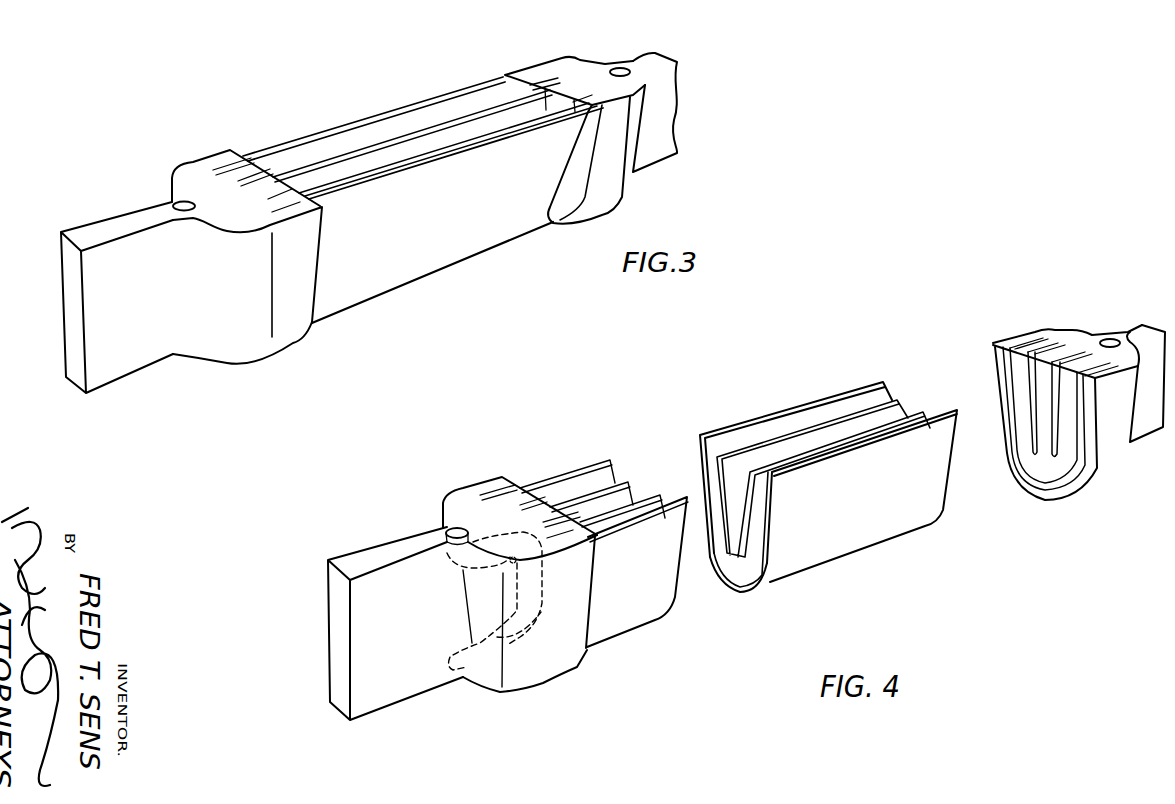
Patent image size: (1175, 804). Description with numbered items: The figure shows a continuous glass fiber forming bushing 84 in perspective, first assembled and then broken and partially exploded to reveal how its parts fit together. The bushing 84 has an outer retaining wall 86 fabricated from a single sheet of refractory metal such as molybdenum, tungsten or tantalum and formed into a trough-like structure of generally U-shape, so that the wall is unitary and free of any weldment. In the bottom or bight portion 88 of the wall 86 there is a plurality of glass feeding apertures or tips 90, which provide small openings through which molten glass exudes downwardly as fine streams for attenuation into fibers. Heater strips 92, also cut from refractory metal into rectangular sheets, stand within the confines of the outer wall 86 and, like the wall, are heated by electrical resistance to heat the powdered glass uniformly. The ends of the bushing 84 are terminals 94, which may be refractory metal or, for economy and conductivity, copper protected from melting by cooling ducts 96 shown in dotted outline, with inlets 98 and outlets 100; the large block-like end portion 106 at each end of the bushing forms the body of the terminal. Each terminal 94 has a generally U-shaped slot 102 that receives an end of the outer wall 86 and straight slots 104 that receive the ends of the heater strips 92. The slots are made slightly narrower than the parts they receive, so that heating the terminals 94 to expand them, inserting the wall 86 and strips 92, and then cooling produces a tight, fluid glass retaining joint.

In FIG. 3, the glass melting bushing 84 is at (165, 160).
In FIG. 4, the glass melting bushing 84 is at (462, 481).
In FIG. 3, the outer retaining wall 86 is at (312, 137).
In FIG. 4, the outer retaining wall 86 is at (749, 398).
In FIG. 3, the bottom or bight portion 88 is at (448, 268).
In FIG. 4, the bottom or bight portion 88 is at (748, 593).
In FIG. 4, the glass feeding apertures or tips 90 is at (730, 591).
In FIG. 3, the heater strips 92 is at (457, 144).
In FIG. 4, the heater strips 92 is at (933, 413).
In FIG. 3, the terminals 94 is at (257, 352).
In FIG. 4, the terminals 94 is at (1062, 335).
In FIG. 4, the cooling ducts 96 is at (497, 638).
In FIG. 3, the inlets 98 is at (183, 207).
In FIG. 4, the inlets 98 is at (463, 531).
In FIG. 4, the outlets 100 is at (453, 675).
In FIG. 4, the U-shaped slots 102 is at (1018, 343).
In FIG. 4, the straight slots 104 is at (1035, 430).
In FIG. 3, the block 106 is at (105, 222).
In FIG. 4, the block 106 is at (390, 548).